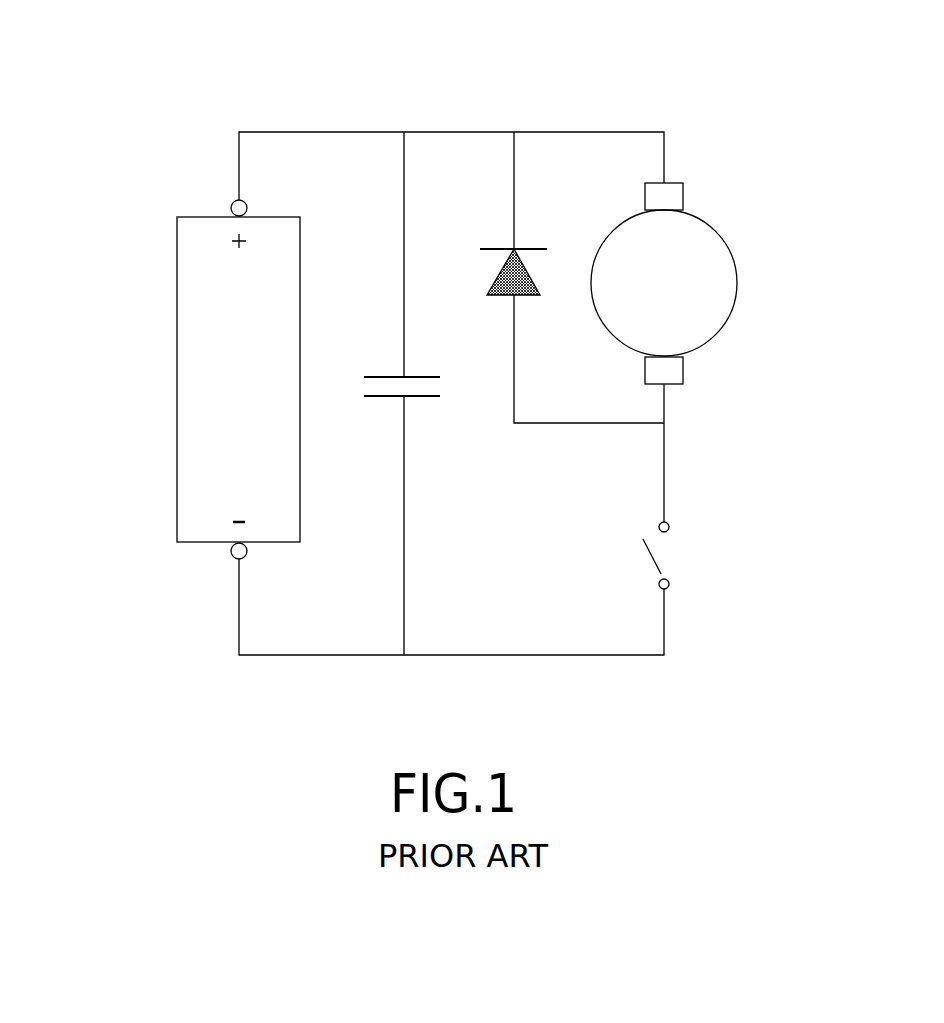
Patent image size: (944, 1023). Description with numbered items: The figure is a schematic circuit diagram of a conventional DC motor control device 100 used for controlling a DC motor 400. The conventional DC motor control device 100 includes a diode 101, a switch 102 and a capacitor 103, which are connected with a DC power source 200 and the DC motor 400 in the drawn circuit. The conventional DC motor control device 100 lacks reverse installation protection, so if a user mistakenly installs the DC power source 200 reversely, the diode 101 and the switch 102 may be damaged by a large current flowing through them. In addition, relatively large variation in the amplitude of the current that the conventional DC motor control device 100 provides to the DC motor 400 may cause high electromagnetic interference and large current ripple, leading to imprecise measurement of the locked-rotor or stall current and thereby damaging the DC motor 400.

The conventional DC motor control device 100 is at (381, 112).
The diode 101 is at (512, 275).
The switch 102 is at (655, 560).
The capacitor 103 is at (378, 377).
The DC power source 200 is at (215, 388).
The DC motor 400 is at (697, 283).